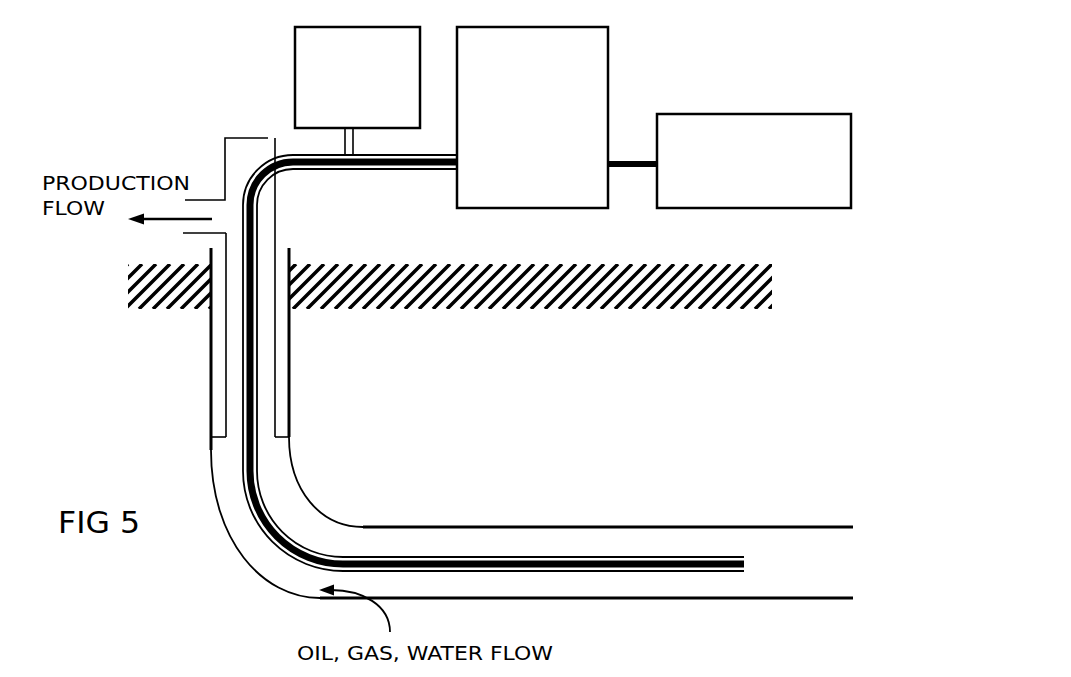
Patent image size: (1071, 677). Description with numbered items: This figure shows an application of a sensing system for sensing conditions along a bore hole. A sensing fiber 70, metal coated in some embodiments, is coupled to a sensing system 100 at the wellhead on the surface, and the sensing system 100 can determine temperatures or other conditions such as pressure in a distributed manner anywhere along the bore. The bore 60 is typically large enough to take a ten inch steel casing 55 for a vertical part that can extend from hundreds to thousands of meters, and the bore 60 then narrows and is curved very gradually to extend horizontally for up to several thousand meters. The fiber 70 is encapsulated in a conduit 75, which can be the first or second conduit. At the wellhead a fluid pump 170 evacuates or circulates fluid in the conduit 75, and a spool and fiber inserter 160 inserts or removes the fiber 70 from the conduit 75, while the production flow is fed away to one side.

The casing 55 is at (222, 312).
The bore 60 is at (400, 538).
The fiber 70 is at (443, 166).
The conduit 75 is at (267, 163).
The sensing system 100 is at (729, 161).
The spool and fiber inserter 160 is at (532, 117).
The fluid pump 170 is at (357, 91).